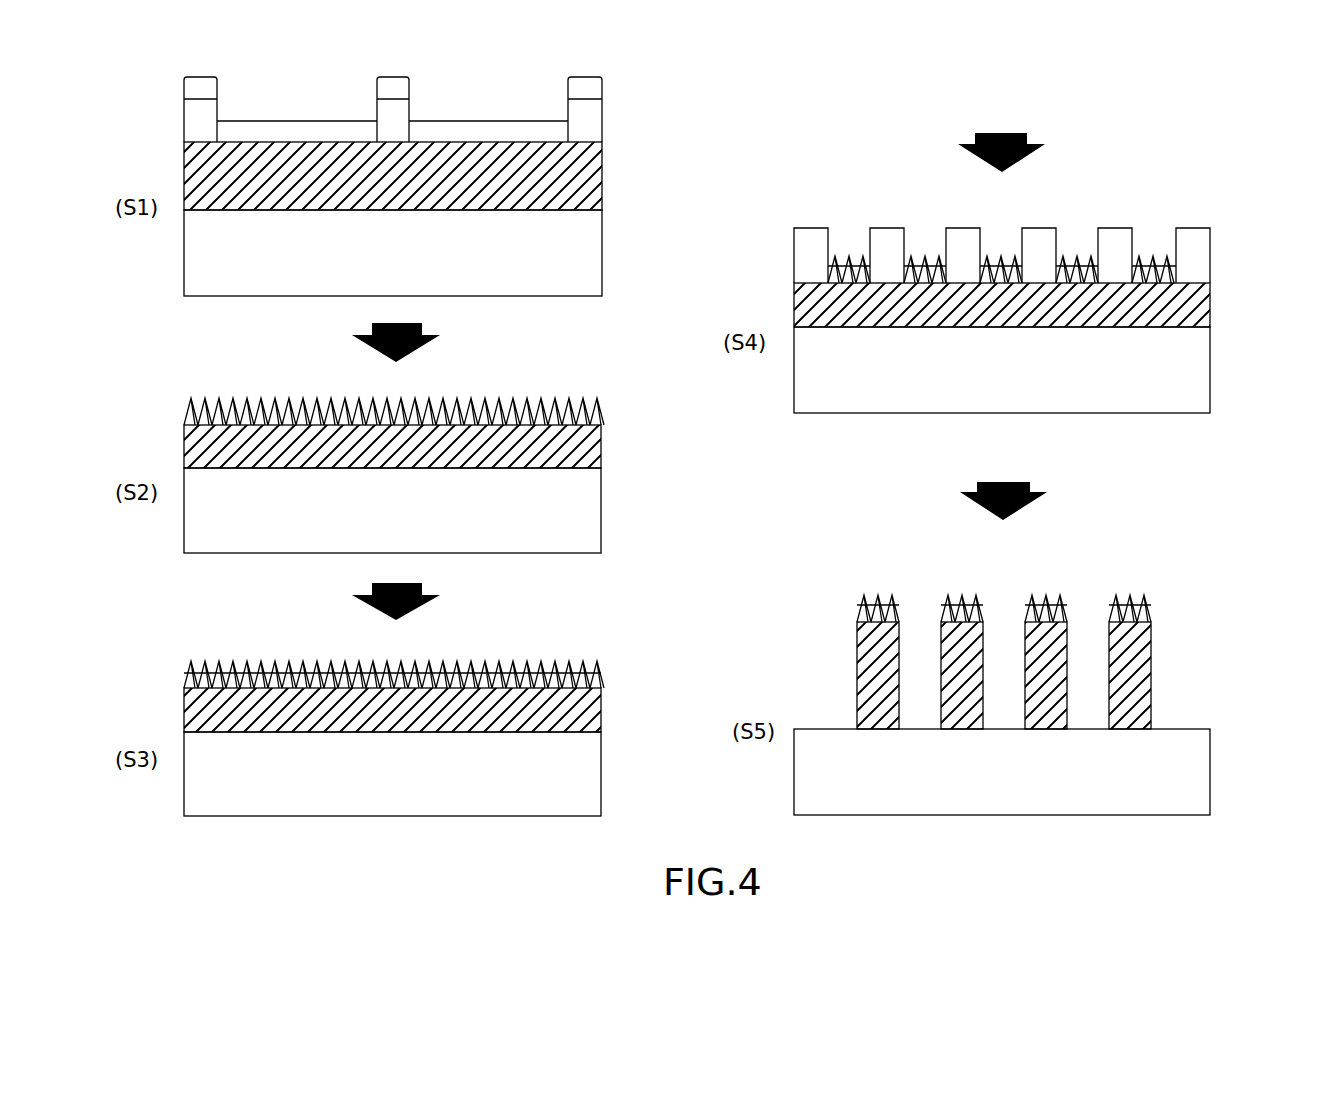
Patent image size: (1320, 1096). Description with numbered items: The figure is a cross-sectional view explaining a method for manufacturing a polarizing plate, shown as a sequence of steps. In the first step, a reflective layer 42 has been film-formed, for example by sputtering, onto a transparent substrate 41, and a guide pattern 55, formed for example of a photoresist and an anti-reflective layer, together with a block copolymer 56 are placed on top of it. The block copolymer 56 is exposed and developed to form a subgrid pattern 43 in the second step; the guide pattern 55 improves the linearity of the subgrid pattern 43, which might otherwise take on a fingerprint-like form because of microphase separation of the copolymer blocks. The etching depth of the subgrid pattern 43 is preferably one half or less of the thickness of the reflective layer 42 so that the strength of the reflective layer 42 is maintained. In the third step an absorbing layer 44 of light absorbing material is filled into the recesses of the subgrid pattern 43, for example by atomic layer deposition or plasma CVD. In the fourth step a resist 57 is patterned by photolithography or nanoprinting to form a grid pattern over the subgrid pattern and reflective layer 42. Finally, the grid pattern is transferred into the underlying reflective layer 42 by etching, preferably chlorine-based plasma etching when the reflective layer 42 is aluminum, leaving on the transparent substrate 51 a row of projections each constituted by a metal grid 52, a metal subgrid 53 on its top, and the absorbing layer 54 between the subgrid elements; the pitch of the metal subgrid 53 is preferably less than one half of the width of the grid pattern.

The transparent substrate 41 is at (602, 247).
The reflective layer 42 is at (602, 172).
The subgrid pattern 43 is at (601, 410).
The absorbing layer 44 is at (518, 661).
The transparent substrate 51 is at (1210, 765).
The metal grid 52 is at (1152, 655).
The metal subgrid 53 is at (1152, 607).
The absorbing layer 54 is at (1118, 596).
The guide pattern 55 is at (602, 122).
The block copolymer 56 is at (484, 121).
The resist 57 is at (1194, 228).